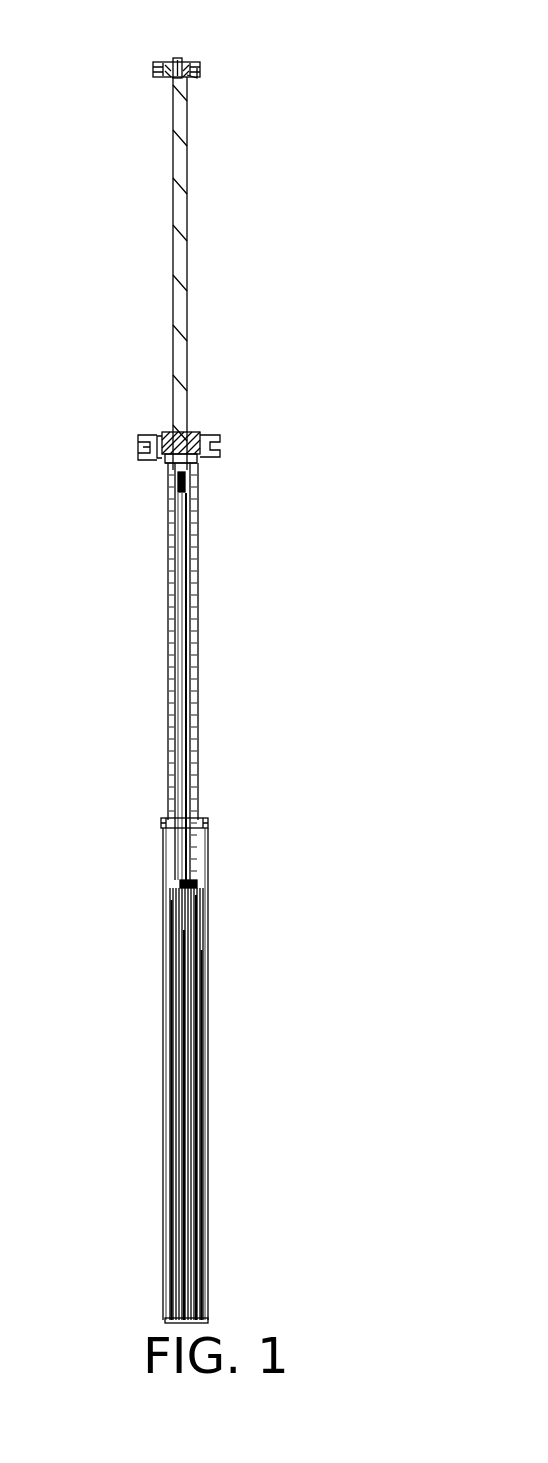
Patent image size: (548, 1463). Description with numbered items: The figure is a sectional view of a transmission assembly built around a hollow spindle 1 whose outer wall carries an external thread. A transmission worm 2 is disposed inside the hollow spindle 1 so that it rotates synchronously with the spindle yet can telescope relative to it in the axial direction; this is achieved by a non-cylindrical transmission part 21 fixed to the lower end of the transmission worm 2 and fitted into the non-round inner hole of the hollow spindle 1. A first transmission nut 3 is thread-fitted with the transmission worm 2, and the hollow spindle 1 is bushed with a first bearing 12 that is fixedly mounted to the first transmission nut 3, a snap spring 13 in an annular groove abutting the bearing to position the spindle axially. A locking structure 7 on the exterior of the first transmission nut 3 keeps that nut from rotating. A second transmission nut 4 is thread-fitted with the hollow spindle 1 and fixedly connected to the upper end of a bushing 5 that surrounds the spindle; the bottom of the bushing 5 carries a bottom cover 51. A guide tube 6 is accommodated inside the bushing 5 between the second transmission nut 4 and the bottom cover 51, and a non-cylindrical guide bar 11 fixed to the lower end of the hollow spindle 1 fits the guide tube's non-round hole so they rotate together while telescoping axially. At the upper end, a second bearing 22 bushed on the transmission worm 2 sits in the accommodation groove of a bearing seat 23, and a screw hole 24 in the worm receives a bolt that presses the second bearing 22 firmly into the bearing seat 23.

The hollow spindle 1 is at (197, 647).
The transmission worm 2 is at (187, 292).
The first transmission nut 3 is at (150, 450).
The second transmission nut 4 is at (167, 832).
The bushing 5 is at (165, 1053).
The guide tube 6 is at (168, 1105).
The locking structure 7 is at (150, 437).
The guide bar 11 is at (197, 882).
The first bearing 12 is at (162, 462).
The snap spring 13 is at (165, 433).
The transmission part 21 is at (193, 482).
The second bearing 22 is at (192, 75).
The bearing seat 23 is at (195, 68).
The screw hole 24 is at (177, 57).
The bottom cover 51 is at (168, 1318).